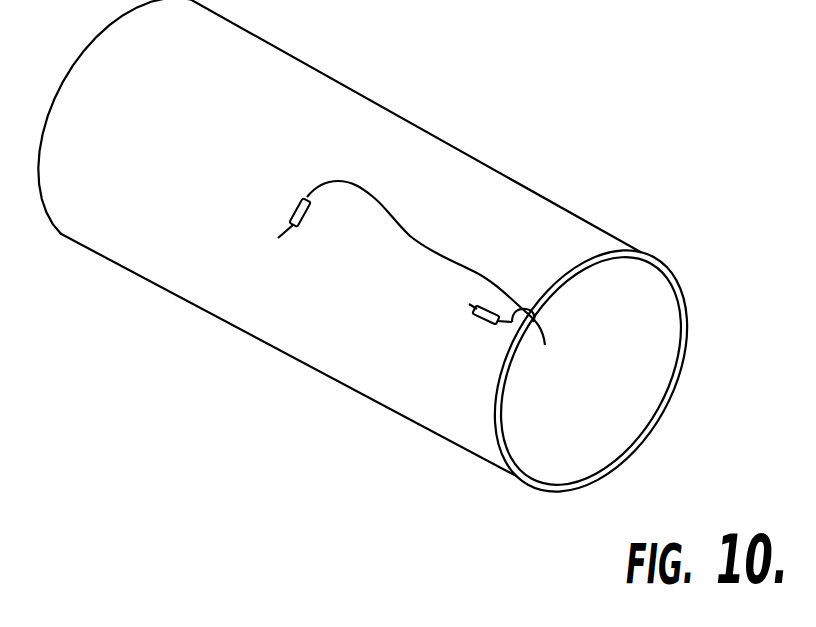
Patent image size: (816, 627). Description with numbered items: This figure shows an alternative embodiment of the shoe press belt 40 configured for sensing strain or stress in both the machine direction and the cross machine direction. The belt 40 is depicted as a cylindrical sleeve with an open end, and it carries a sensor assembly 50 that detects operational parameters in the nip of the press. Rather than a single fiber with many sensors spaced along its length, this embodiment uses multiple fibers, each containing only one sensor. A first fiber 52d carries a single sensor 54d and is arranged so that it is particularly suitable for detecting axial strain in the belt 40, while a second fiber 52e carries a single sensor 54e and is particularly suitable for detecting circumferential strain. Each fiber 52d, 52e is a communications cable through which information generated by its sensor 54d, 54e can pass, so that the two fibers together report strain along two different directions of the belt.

The shoe press belt 40 is at (395, 262).
The sensor assembly 50 is at (582, 293).
The fiber 52e is at (385, 215).
The fiber 52d is at (521, 337).
The sensor 54e is at (305, 227).
The sensor 54d is at (481, 324).